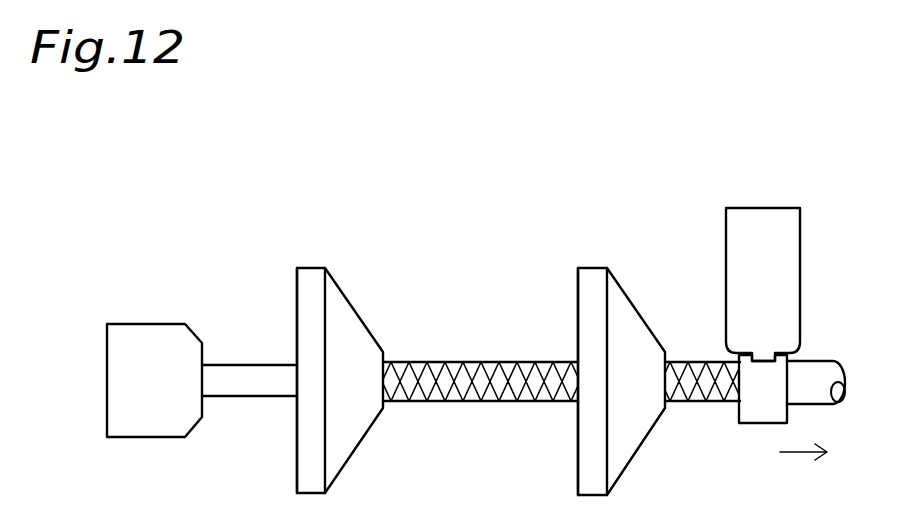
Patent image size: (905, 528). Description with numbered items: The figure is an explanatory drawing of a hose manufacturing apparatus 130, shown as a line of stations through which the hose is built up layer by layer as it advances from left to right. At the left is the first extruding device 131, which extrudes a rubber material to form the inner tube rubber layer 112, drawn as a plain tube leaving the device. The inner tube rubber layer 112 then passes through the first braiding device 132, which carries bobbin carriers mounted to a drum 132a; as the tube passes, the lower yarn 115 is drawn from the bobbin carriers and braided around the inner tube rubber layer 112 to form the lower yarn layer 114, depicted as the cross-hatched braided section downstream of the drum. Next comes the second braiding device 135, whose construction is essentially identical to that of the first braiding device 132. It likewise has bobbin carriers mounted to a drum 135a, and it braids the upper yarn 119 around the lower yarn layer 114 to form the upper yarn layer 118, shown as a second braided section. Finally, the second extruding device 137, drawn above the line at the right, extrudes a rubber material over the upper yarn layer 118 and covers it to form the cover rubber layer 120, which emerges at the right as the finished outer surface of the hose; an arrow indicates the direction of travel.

The hose manufacturing apparatus 130 is at (475, 212).
The first extruding device 131 is at (136, 330).
The inner tube rubber layer 112 is at (245, 388).
The first braiding device 132 is at (312, 275).
The drum 132a is at (307, 310).
The lower yarn layer 114 is at (418, 372).
The lower yarn 115 is at (402, 403).
The second braiding device 135 is at (595, 277).
The drum 135a is at (592, 308).
The upper yarn layer 118 is at (702, 368).
The upper yarn 119 is at (703, 400).
The second extruding device 137 is at (752, 218).
The cover rubber layer 120 is at (810, 372).